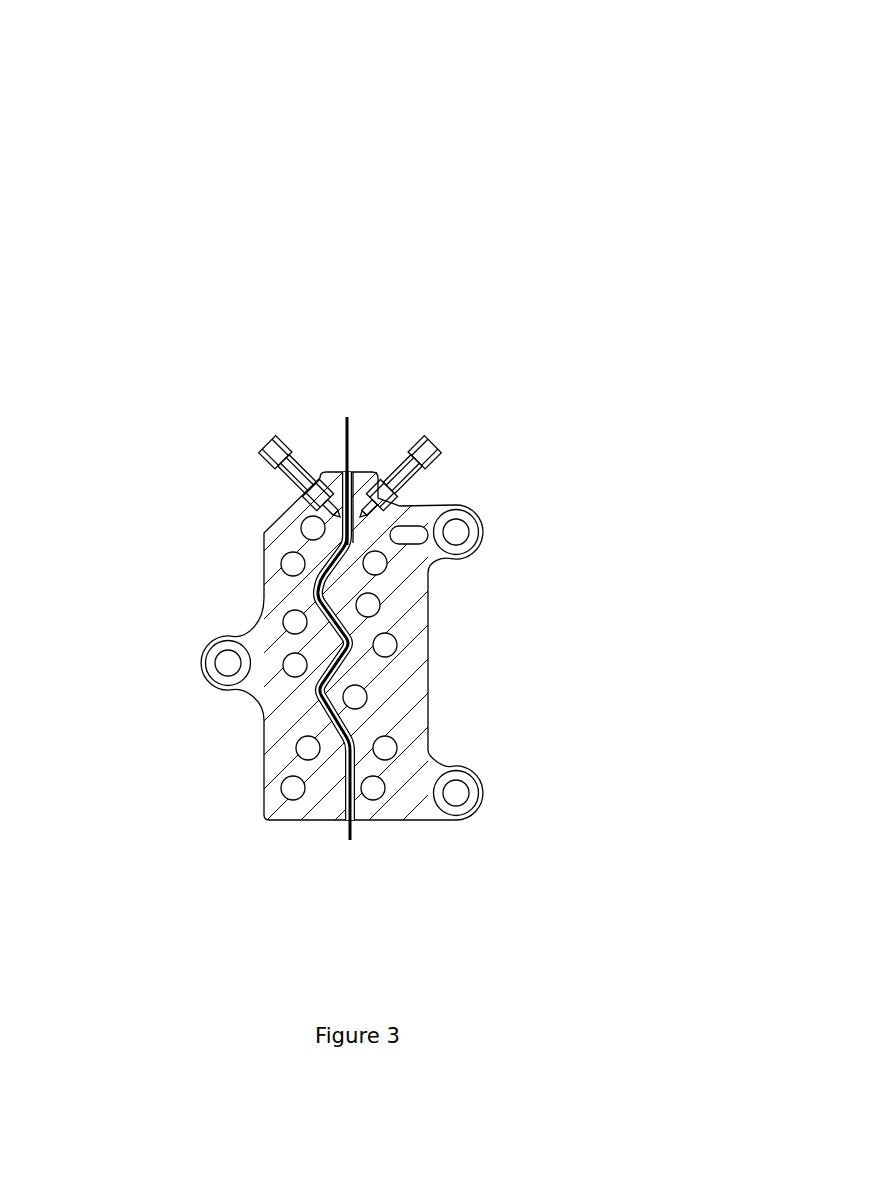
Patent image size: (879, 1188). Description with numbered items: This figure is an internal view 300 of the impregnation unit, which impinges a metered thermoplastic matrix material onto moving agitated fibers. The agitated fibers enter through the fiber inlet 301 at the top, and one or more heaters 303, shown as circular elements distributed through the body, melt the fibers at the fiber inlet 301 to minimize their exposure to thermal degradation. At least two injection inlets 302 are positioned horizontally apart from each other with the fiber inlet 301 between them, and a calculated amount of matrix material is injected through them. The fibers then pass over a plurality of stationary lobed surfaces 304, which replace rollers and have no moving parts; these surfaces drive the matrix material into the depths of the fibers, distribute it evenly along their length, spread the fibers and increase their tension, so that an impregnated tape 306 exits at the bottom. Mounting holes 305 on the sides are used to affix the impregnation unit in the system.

The internal view 300 is at (603, 95).
The fiber inlet 301 is at (347, 475).
The injection inlets 302 is at (482, 405).
The heaters 303 is at (287, 573).
The stationary lobed surfaces 304 is at (360, 641).
The mounting holes 305 is at (207, 637).
The impregnated tape 306 is at (354, 827).